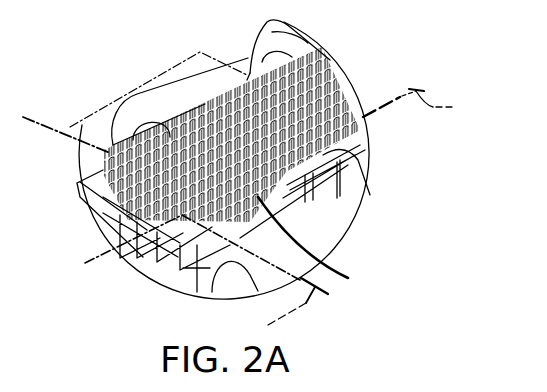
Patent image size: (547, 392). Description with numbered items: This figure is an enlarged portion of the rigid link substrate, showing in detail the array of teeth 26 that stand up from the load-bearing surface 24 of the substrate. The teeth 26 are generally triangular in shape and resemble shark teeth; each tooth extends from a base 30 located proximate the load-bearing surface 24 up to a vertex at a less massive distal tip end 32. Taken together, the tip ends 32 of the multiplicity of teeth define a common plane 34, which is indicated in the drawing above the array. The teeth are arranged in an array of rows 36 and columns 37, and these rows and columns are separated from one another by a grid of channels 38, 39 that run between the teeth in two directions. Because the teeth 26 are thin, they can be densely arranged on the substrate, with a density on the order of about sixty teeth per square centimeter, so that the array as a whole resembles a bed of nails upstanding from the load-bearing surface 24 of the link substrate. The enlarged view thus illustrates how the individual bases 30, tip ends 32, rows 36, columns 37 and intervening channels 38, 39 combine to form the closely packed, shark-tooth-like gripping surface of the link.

The load-bearing surface 24 is at (358, 158).
The teeth 26 is at (229, 242).
The base 30 is at (195, 215).
The distal tip end 32 is at (108, 154).
The common plane 34 is at (182, 62).
The rows 36 is at (419, 103).
The columns 37 is at (285, 310).
The channel 38 is at (350, 136).
The channel 39 is at (122, 181).